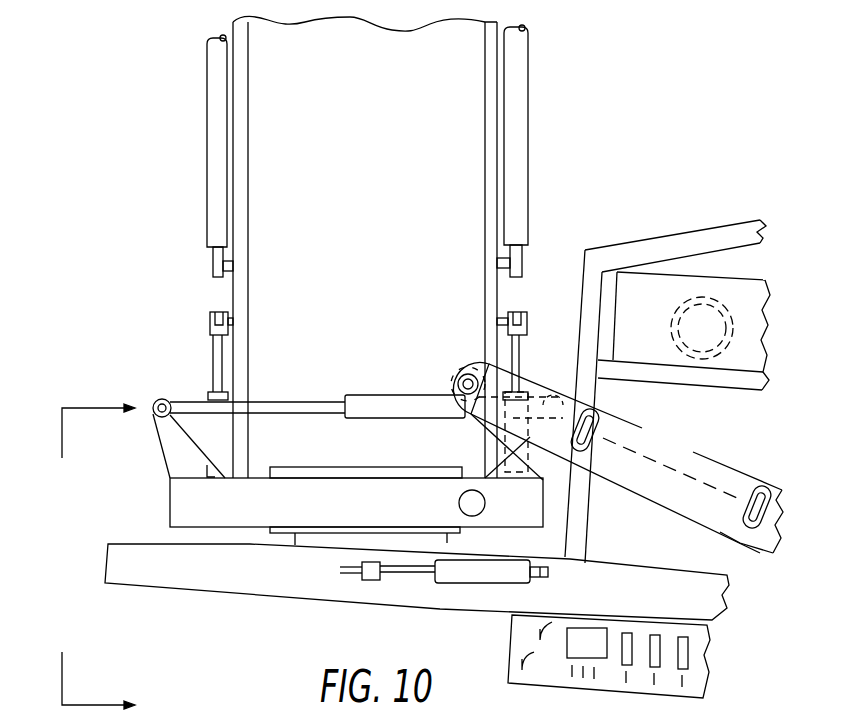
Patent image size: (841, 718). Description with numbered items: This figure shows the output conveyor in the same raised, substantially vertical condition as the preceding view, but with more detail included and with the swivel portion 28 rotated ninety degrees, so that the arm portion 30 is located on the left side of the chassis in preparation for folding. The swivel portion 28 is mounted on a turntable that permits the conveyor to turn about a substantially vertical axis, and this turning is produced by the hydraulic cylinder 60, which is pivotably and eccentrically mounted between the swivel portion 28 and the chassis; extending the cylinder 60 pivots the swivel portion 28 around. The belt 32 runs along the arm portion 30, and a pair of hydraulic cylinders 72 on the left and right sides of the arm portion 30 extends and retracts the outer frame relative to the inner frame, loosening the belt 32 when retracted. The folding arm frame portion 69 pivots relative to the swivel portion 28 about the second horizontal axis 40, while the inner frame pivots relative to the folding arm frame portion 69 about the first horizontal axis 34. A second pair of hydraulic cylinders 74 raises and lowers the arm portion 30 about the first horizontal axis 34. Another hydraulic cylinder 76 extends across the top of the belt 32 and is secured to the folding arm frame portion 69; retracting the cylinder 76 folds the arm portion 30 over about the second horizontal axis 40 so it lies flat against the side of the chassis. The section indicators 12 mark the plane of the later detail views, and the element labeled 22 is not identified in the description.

The section line indicator 12 is at (101, 556).
The pivot arm 22 is at (635, 447).
The swivel portion 28 is at (347, 470).
The arm portion 30 is at (495, 302).
The belt 32 is at (428, 195).
The first horizontal axis 34 is at (584, 666).
The second horizontal axis 40 is at (463, 514).
The hydraulic cylinder 60 is at (477, 570).
The folding arm frame portion 69 is at (170, 458).
The hydraulic cylinders 72 is at (212, 132).
The hydraulic cylinders 74 is at (205, 388).
The hydraulic cylinder 76 is at (388, 398).